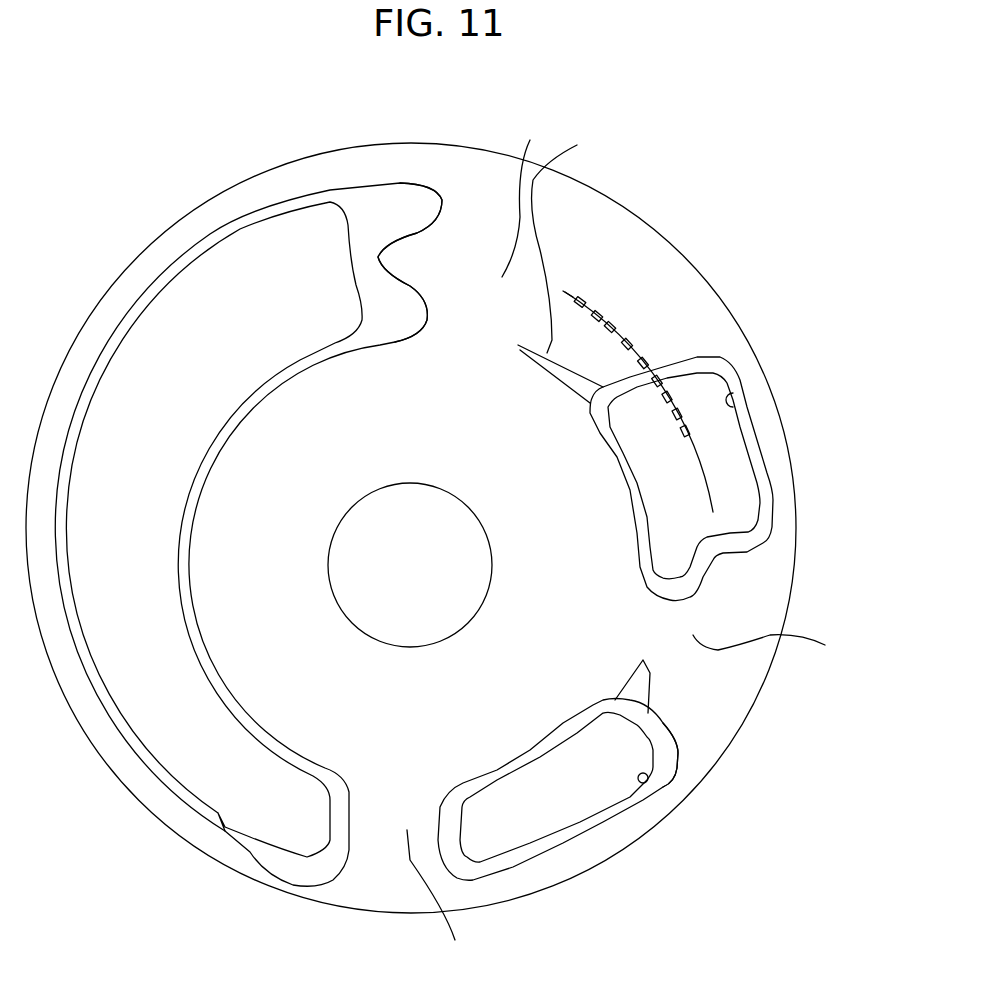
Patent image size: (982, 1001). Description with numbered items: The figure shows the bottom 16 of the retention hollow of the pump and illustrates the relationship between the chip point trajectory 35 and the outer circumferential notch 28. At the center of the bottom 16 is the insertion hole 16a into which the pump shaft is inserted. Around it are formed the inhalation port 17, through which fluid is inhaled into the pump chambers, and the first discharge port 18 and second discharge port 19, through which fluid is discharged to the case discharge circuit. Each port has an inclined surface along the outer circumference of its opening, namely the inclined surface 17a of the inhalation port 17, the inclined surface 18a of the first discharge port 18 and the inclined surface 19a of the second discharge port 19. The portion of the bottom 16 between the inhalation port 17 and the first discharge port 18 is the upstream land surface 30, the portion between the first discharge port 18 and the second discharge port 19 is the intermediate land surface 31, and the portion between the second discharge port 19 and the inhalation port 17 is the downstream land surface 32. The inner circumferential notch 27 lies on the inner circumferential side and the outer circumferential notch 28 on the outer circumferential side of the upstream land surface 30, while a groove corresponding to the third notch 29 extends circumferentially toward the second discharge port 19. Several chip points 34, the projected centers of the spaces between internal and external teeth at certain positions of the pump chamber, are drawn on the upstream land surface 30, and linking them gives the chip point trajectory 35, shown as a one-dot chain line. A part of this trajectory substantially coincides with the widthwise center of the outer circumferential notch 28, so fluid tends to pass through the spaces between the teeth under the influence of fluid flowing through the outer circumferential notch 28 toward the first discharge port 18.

The bottom 16 is at (488, 200).
The insertion hole 16a is at (330, 556).
The inhalation port 17 is at (253, 230).
The inclined surface 17a is at (368, 217).
The first discharge port 18 is at (750, 395).
The inclined surface 18a is at (732, 372).
The second discharge port 19 is at (648, 781).
The inclined surface 19a is at (678, 753).
The inner circumferential notch 27 is at (569, 237).
The outer circumferential notch 28 is at (665, 355).
The third notch 29 is at (650, 688).
The upstream land surface 30 is at (527, 194).
The intermediate land surface 31 is at (774, 648).
The downstream land surface 32 is at (438, 901).
The chip point 34 is at (580, 300).
The chip point trajectory 35 is at (705, 490).